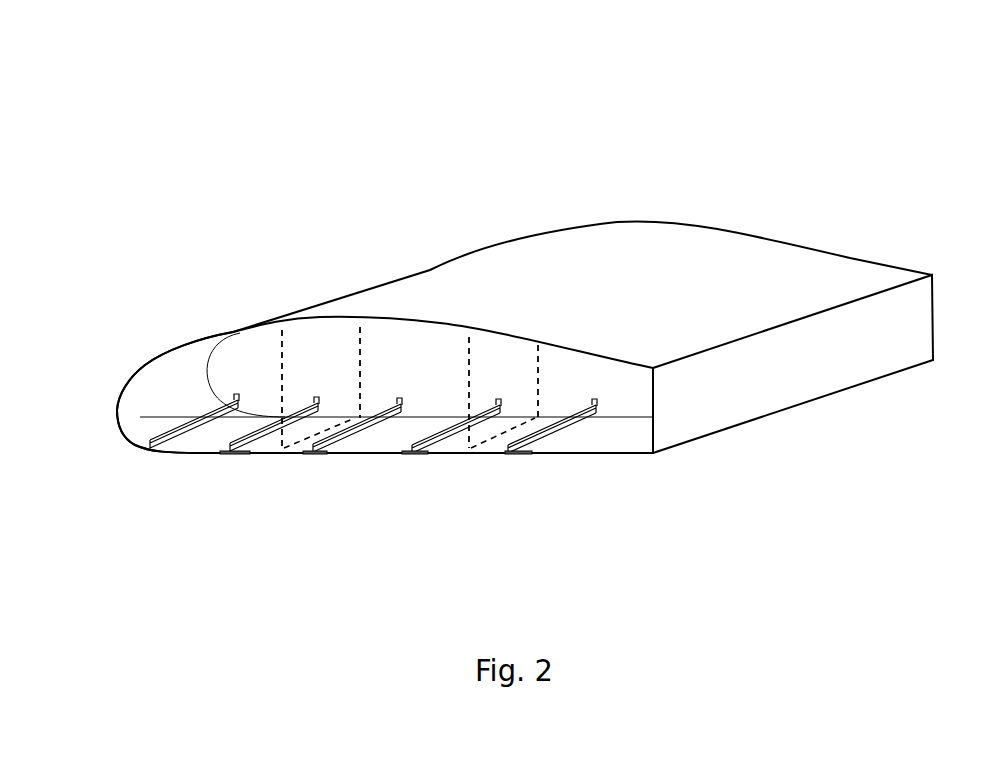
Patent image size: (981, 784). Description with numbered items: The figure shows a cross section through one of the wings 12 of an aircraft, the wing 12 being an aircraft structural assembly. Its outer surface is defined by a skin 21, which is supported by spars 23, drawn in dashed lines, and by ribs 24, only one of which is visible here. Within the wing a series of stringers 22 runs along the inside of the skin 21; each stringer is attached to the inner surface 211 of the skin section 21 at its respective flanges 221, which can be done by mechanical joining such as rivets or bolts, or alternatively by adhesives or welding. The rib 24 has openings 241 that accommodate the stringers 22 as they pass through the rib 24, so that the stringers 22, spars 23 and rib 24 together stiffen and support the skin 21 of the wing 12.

The wing 12 is at (492, 133).
The skin 21 is at (482, 290).
The rib 24 is at (257, 345).
The inner surface 211 is at (162, 404).
The spars 23 is at (273, 400).
The stringers 22 is at (358, 446).
The flanges 221 is at (328, 452).
The openings 241 is at (599, 405).